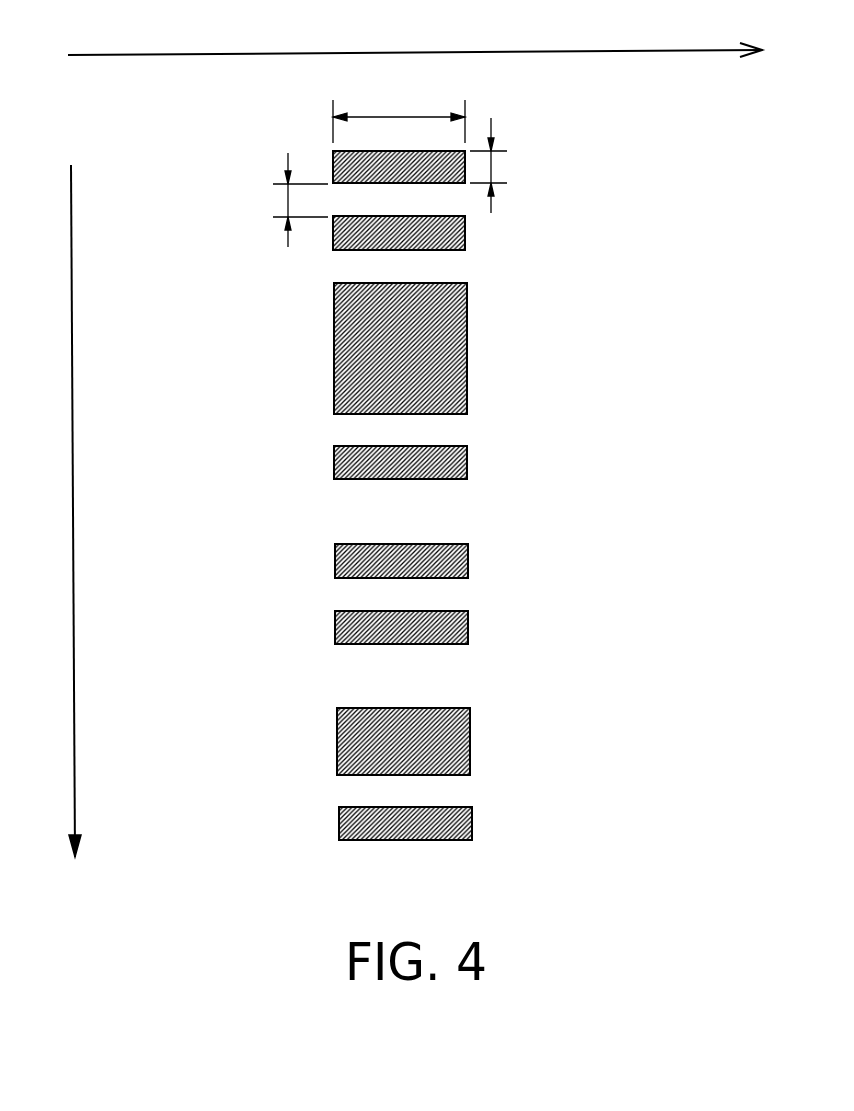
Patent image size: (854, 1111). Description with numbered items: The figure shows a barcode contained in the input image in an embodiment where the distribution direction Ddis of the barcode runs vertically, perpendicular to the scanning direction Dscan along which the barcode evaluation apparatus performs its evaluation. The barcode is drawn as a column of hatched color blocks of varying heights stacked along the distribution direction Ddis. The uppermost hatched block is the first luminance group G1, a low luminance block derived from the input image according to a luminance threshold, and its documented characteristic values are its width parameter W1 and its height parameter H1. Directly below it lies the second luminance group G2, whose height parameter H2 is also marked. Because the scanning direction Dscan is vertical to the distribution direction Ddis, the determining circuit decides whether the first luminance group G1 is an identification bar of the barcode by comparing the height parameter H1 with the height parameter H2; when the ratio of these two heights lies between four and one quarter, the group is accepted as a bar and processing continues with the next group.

The first luminance group G1 is at (333, 158).
The second luminance group G2 is at (465, 198).
The width parameter W1 is at (399, 113).
The height parameter of the first luminance group H1 is at (507, 165).
The height parameter of the second luminance group H2 is at (280, 200).
The scanning direction Dscan is at (415, 28).
The distribution direction Ddis is at (40, 511).